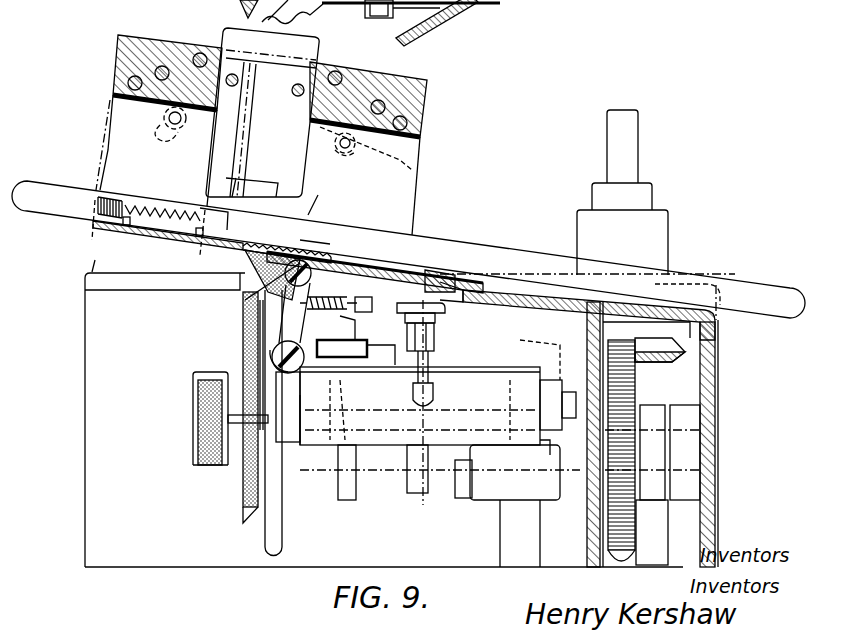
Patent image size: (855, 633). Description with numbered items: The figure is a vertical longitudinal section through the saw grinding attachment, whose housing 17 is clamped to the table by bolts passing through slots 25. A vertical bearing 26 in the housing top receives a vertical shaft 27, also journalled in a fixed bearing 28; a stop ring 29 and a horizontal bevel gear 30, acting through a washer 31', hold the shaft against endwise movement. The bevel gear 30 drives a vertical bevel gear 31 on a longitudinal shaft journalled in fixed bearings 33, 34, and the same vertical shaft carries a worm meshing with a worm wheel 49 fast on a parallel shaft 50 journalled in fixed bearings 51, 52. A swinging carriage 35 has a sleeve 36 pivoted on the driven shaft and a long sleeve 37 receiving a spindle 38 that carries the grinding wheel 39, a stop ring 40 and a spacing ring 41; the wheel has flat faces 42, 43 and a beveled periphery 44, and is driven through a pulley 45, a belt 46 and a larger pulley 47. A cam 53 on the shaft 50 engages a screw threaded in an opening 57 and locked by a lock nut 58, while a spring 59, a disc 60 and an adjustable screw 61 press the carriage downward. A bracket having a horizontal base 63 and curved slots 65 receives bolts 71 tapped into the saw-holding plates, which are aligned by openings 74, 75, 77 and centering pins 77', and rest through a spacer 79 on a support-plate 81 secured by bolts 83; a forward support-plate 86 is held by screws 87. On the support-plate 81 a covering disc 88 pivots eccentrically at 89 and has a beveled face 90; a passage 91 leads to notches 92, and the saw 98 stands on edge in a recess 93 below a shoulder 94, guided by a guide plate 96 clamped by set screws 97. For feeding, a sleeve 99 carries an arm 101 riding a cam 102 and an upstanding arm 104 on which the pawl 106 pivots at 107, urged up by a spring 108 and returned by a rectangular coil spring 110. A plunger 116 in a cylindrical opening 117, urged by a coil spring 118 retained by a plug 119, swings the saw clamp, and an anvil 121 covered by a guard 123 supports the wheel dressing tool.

The housing 17 is at (710, 490).
The slots 25 is at (327, 194).
The vertical bearing 26 is at (650, 253).
The vertical shaft 27 is at (630, 133).
The fixed bearing 28 is at (652, 547).
The stop ring 29 is at (638, 200).
The horizontal bevel gear 30 is at (672, 348).
The vertical bevel gear 31 is at (548, 383).
The bearing element or washer 31' is at (687, 286).
The fixed bearing 33 is at (300, 348).
The fixed bearing 34 is at (500, 342).
The swinging support or carriage 35 is at (390, 358).
The sleeve 36 is at (362, 340).
The sleeve or bearing 37 is at (403, 447).
The shaft or spindle 38 is at (550, 433).
The cutter or grinding wheel 39 is at (243, 492).
The stop ring 40 is at (522, 472).
The spacing ring 41 is at (289, 418).
The flat face 42 is at (245, 472).
The flat face 43 is at (252, 492).
The periphery 44 is at (238, 6).
The pulley 45 is at (192, 410).
The belt 46 is at (205, 388).
The larger pulley 47 is at (258, 340).
The worm wheel 49 is at (628, 532).
The horizontal longitudinal shaft 50 is at (463, 462).
The fixed bearing 51 is at (680, 424).
The fixed bearing 52 is at (543, 483).
The cam 53 is at (418, 480).
The opening 57 is at (430, 308).
The lock nut 58 is at (432, 326).
The spring 59 is at (374, 301).
The disc 60 is at (477, 293).
The adjustable screw 61 is at (473, 285).
The horizontal base 63 is at (95, 265).
The circularly curved slots 65 is at (168, 136).
The bolts 71 is at (178, 128).
The openings 74 is at (133, 80).
The openings 75 is at (495, 282).
The openings 77 is at (273, 65).
The centering pins 77' is at (473, 252).
The spacer 79 is at (441, 280).
The support-plate 81 is at (450, 285).
The bolts 83 is at (435, 273).
The forward support-plate 86 is at (155, 238).
The screws 87 is at (128, 230).
The pawl controlling or covering disc 88 is at (344, 258).
The eccentric pivot 89 is at (312, 258).
The beveled face 90 is at (400, 266).
The passage 91 is at (240, 246).
The notches 92 is at (252, 186).
The recess 93 is at (392, 155).
The shoulder 94 is at (425, 100).
The guide plate or element 96 is at (300, 52).
The set screws 97 is at (246, 92).
The saw 98 is at (47, 192).
The sleeve 99 is at (208, 407).
The arm 101 is at (352, 378).
The cam 102 is at (350, 470).
The upstanding arm 104 is at (258, 318).
The pawl 106 is at (245, 278).
The pivot 107 is at (250, 288).
The spring 108 is at (255, 300).
The rectangular coil spring 110 is at (325, 308).
The plunger 116 is at (214, 210).
The cylindrical opening 117 is at (152, 206).
The compressible coil spring 118 is at (120, 208).
The screw threaded plug 119 is at (108, 200).
The anvil 121 is at (318, 17).
The housing or guard 123 is at (441, 21).